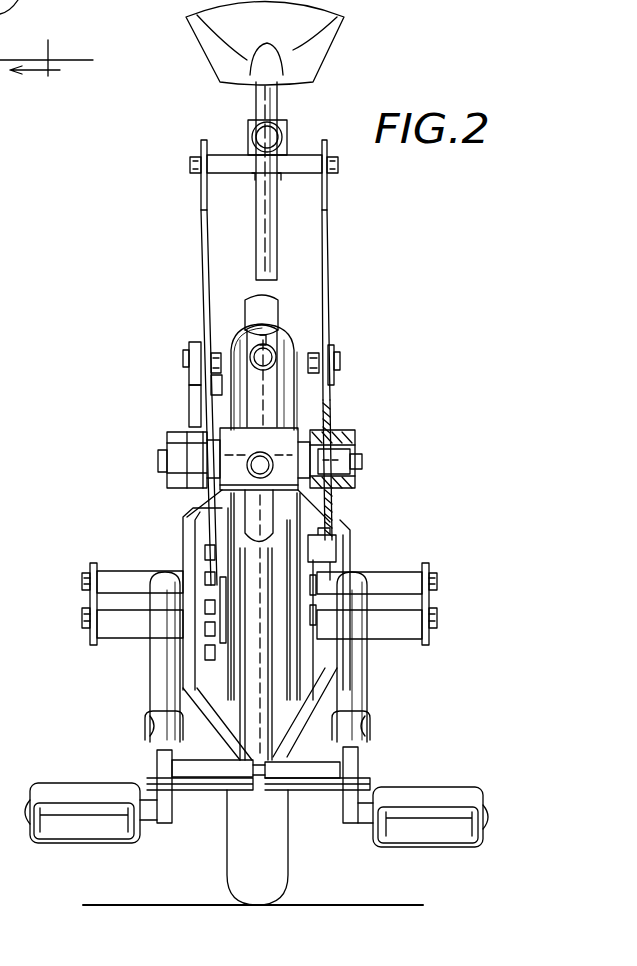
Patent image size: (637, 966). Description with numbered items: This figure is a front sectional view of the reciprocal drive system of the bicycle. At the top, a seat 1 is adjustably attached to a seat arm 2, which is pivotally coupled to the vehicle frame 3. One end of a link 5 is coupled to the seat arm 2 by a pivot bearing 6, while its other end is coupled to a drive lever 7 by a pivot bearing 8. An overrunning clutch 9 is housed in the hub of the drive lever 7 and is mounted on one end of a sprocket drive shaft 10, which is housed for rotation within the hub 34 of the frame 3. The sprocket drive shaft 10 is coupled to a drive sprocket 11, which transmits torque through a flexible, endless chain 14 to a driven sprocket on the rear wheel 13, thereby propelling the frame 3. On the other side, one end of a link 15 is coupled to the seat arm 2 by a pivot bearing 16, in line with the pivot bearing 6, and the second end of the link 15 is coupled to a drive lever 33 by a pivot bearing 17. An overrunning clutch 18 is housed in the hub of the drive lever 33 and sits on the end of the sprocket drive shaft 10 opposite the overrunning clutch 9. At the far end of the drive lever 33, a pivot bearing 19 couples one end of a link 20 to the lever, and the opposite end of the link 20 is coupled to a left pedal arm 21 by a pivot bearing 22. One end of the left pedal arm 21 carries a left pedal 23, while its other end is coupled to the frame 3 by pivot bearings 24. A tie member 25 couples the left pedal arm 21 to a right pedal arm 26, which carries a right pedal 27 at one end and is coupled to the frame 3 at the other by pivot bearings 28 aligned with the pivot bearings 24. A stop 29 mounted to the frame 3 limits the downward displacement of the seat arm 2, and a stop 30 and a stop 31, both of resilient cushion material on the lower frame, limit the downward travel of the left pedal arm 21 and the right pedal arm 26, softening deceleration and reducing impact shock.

The seat 1 is at (325, 48).
The seat arm 2 is at (250, 135).
The vehicle frame 3 is at (250, 350).
The link 5 is at (200, 203).
The pivot bearing 6 is at (200, 150).
The drive lever 7 is at (190, 400).
The pivot bearing 8 is at (195, 345).
The overrunning clutch 9 is at (172, 440).
The sprocket drive shaft 10 is at (360, 452).
The drive sprocket 11 is at (208, 385).
The rear wheel 13 is at (289, 840).
The flexible, endless chain 14 is at (205, 555).
The link 15 is at (328, 230).
The pivot bearing 16 is at (343, 122).
The pivot bearing 17 is at (322, 350).
The overrunning clutch 18 is at (338, 433).
The pivot bearing 19 is at (336, 545).
The link 20 is at (320, 700).
The left pedal arm 21 is at (368, 652).
The pivot bearing 22 is at (328, 760).
The left pedal 23 is at (418, 787).
The pivot bearings 24 is at (416, 568).
The tie member 25 is at (223, 765).
The right pedal arm 26 is at (143, 648).
The right pedal 27 is at (93, 783).
The pivot bearings 28 is at (98, 568).
The stop 29 is at (280, 305).
The stop 30 is at (372, 730).
The stop 31 is at (143, 730).
The drive lever 33 is at (332, 410).
The hub 34 is at (236, 475).